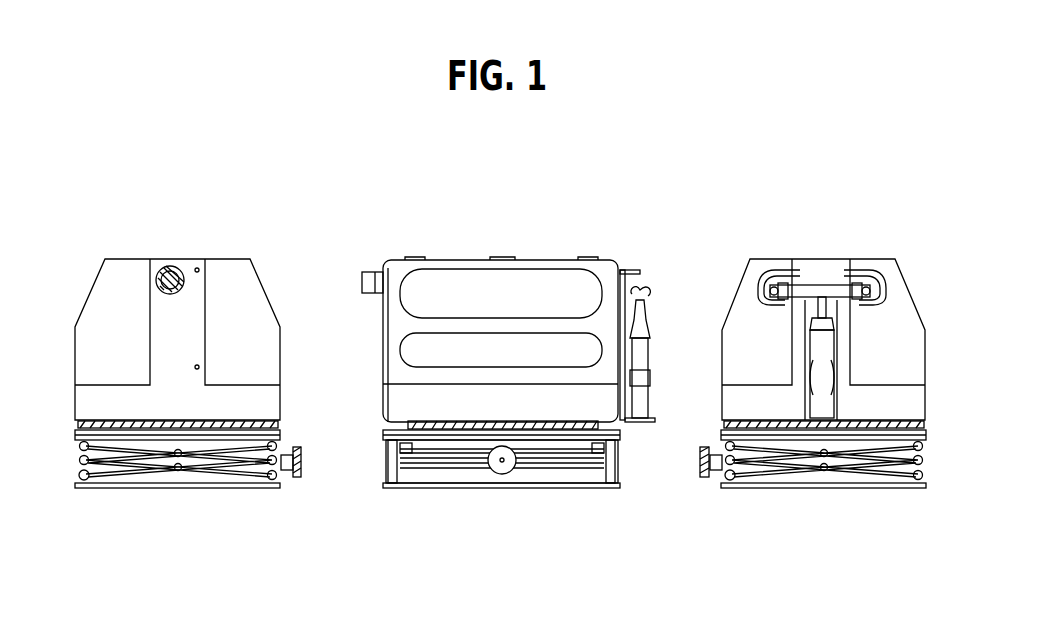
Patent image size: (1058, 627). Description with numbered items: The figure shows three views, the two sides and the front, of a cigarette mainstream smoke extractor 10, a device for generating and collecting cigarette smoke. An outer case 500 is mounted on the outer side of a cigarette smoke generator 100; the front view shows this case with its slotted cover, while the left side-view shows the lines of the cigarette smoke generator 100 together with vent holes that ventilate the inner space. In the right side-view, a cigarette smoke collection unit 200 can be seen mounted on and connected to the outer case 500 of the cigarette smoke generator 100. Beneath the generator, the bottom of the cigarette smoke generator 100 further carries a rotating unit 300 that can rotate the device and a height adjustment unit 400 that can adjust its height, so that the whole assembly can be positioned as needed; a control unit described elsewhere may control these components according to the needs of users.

The cigarette mainstream smoke extractor 10 is at (326, 204).
The cigarette smoke generator 100 is at (178, 259).
The cigarette smoke collection unit 200 is at (822, 284).
The rotating unit 300 is at (278, 430).
The height adjustment unit 400 is at (290, 480).
The outer case 500 is at (462, 260).